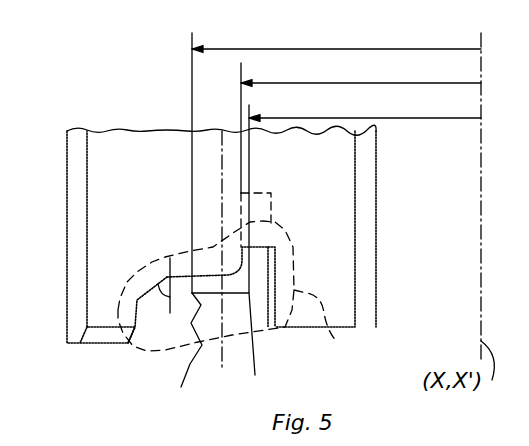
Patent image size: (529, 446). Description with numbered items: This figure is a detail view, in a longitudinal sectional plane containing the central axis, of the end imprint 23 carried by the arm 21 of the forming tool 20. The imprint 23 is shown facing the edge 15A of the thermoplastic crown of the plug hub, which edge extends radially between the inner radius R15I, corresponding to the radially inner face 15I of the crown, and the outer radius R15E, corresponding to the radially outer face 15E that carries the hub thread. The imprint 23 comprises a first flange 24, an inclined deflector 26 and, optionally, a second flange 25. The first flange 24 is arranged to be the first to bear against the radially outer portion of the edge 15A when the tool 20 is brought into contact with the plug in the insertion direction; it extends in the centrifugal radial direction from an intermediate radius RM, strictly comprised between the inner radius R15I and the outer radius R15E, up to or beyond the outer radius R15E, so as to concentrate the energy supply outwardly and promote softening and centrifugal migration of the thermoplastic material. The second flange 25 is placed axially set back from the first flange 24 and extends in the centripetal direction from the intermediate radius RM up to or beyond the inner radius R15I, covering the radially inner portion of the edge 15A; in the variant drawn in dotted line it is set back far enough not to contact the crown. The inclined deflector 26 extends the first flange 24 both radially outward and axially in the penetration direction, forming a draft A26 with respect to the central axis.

The forming tool 20 is at (120, 58).
The arm 21 is at (77, 138).
The imprint 23 is at (338, 342).
The first flange 24 is at (199, 262).
The second flange 25 is at (268, 182).
The inclined deflector 26 is at (128, 296).
The draft A26 is at (160, 288).
The edge of the crown 15A is at (232, 293).
The radially outer face 15E is at (180, 327).
The radially inner face 15I is at (262, 359).
The outer radius R15E is at (336, 40).
The intermediate radius RM is at (361, 73).
The inner radius R15I is at (365, 108).